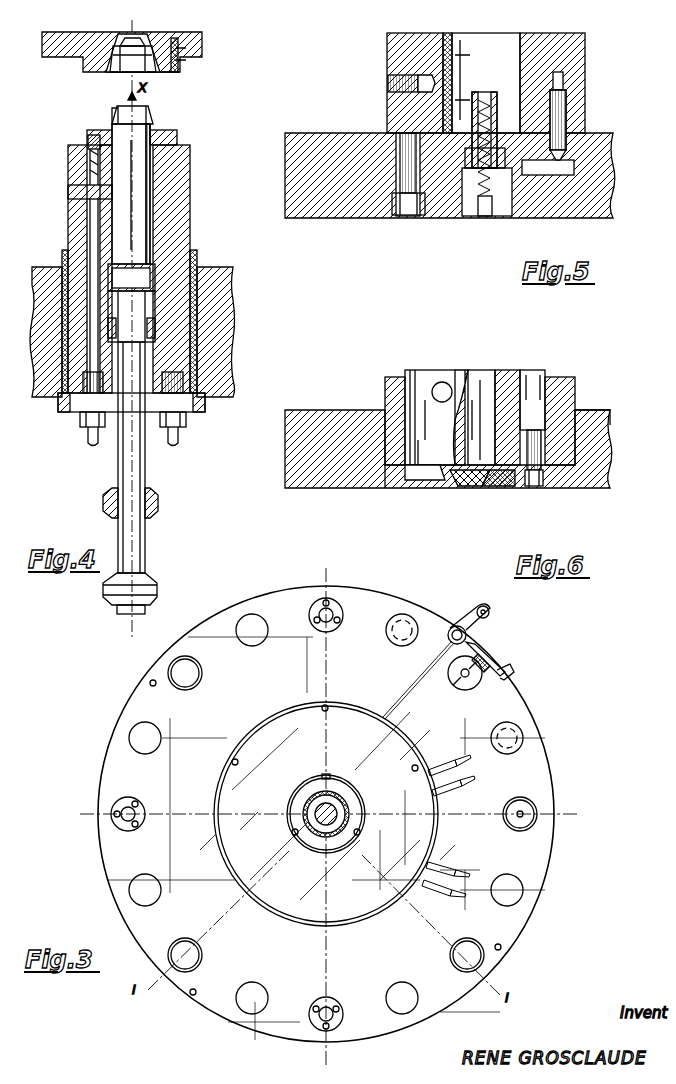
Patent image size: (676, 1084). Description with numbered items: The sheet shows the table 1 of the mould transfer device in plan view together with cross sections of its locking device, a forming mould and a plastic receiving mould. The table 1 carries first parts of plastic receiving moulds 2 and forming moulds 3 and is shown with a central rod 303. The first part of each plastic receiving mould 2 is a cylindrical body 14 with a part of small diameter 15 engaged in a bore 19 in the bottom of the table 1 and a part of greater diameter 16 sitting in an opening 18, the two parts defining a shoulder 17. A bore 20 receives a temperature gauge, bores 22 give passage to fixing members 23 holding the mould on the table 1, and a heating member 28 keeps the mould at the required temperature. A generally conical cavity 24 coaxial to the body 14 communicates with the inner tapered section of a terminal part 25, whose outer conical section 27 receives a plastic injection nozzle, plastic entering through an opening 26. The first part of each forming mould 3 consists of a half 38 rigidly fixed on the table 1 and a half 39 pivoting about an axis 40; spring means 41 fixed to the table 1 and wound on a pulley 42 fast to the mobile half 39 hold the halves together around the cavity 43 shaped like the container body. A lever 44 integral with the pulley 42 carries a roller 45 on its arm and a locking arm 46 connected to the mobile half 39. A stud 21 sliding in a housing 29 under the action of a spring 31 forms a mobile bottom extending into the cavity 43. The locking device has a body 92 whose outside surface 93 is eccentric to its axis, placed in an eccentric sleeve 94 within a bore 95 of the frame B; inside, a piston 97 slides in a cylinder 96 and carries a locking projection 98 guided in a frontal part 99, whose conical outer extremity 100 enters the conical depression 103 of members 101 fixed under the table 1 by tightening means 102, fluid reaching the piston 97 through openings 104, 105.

In FIG. 4, the table 1 is at (62, 57).
In FIG. 5, the table 1 is at (615, 118).
In FIG. 6, the table 1 is at (598, 485).
In FIG. 3, the table 1 is at (523, 712).
In FIG. 3, the plastic receiving mould 2 is at (506, 828).
In FIG. 3, the forming mould 3 is at (193, 680).
In FIG. 6, the cylindrical body 14 is at (428, 380).
In FIG. 6, the part of small diameter 15 is at (450, 480).
In FIG. 6, the part of greater diameter 16 is at (427, 452).
In FIG. 6, the shoulder 17 is at (412, 470).
In FIG. 6, the opening 18 is at (590, 405).
In FIG. 6, the bore 19 is at (540, 486).
In FIG. 6, the bore 20 is at (444, 383).
In FIG. 5, the stud 21 is at (486, 92).
In FIG. 6, the bores 22 is at (545, 378).
In FIG. 6, the fixing members 23 is at (548, 472).
In FIG. 6, the cavity 24 is at (492, 380).
In FIG. 6, the terminal part 25 is at (492, 470).
In FIG. 6, the opening 26 is at (500, 486).
In FIG. 6, the outer conical section 27 is at (475, 486).
In FIG. 6, the heating member 28 is at (385, 392).
In FIG. 5, the housing 29 is at (495, 212).
In FIG. 5, the spring 31 is at (470, 212).
In FIG. 5, the fixed half of the forming mould 38 is at (578, 60).
In FIG. 5, the mobile half of the forming mould 39 is at (385, 52).
In FIG. 3, the pivoting axis 40 is at (449, 640).
In FIG. 3, the spring means 41 is at (400, 712).
In FIG. 3, the pulley 42 is at (476, 644).
In FIG. 5, the cavity 43 is at (486, 83).
In FIG. 3, the lever 44 is at (460, 620).
In FIG. 3, the roller 45 is at (489, 612).
In FIG. 3, the locking arm 46 is at (512, 668).
In FIG. 4, the body 92 is at (186, 212).
In FIG. 4, the outside surface 93 is at (190, 175).
In FIG. 4, the sleeve 94 is at (197, 262).
In FIG. 4, the bore 95 is at (205, 408).
In FIG. 4, the cylinder 96 is at (131, 316).
In FIG. 4, the piston 97 is at (131, 284).
In FIG. 4, the locking projection 98 is at (113, 110).
In FIG. 4, the frontal part 99 is at (177, 137).
In FIG. 4, the outer extremity 100 is at (150, 112).
In FIG. 4, the members 101 is at (163, 72).
In FIG. 4, the tightening means 102 is at (178, 62).
In FIG. 4, the conical shaped depression 103 is at (120, 70).
In FIG. 4, the opening 104 is at (178, 440).
In FIG. 4, the opening 105 is at (88, 440).
In FIG. 3, the rod 303 is at (340, 800).
In FIG. 4, the frame B is at (222, 332).